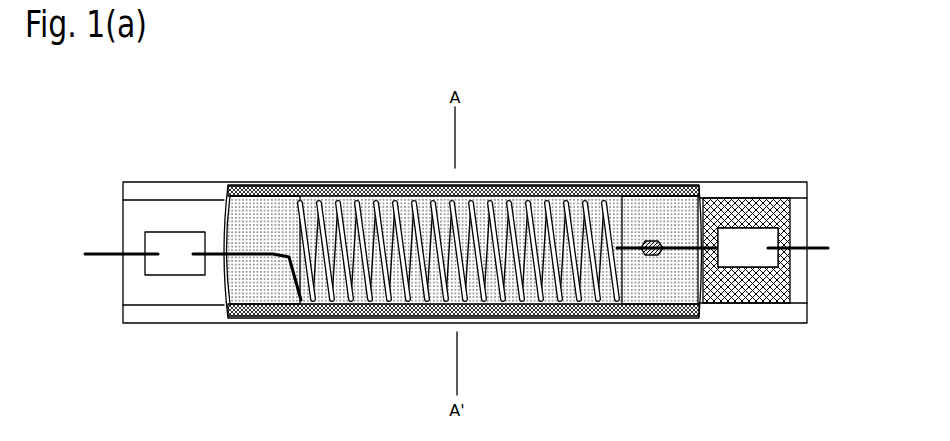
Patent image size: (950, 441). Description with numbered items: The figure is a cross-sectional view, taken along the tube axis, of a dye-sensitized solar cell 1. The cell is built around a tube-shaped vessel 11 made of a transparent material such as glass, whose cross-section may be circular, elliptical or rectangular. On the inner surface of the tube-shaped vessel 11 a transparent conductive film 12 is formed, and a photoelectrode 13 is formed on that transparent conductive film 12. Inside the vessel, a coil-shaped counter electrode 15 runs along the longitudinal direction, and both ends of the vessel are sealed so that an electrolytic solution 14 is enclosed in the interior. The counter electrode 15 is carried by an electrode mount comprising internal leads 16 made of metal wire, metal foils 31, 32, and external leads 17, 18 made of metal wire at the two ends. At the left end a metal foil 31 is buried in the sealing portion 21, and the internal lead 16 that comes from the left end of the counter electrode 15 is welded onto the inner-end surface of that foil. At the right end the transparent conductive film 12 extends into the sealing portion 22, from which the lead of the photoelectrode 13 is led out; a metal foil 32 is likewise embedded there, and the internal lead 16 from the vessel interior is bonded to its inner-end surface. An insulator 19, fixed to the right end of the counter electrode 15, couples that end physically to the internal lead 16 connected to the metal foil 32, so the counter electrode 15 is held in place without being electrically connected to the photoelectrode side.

The solar cell 1 is at (531, 160).
The tube-shaped vessel 11 is at (310, 184).
The transparent conductive film 12 is at (369, 310).
The photoelectrode 13 is at (592, 313).
The electrolytic solution 14 is at (247, 278).
The counter electrode 15 is at (297, 305).
The internal lead 16 is at (248, 250).
The external lead 17 is at (102, 258).
The external lead 18 is at (818, 262).
The insulator 19 is at (655, 241).
The sealing portion 21 is at (180, 217).
The sealing portion 22 is at (733, 198).
The metal foil 31 is at (177, 265).
The metal foil 32 is at (747, 267).